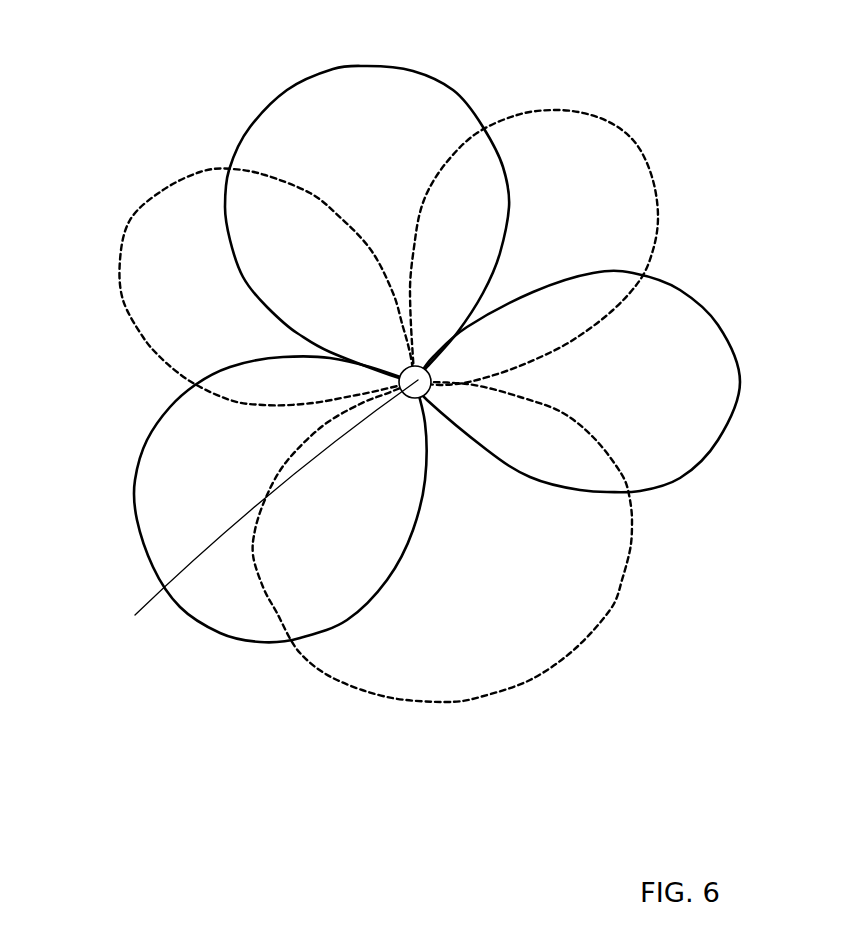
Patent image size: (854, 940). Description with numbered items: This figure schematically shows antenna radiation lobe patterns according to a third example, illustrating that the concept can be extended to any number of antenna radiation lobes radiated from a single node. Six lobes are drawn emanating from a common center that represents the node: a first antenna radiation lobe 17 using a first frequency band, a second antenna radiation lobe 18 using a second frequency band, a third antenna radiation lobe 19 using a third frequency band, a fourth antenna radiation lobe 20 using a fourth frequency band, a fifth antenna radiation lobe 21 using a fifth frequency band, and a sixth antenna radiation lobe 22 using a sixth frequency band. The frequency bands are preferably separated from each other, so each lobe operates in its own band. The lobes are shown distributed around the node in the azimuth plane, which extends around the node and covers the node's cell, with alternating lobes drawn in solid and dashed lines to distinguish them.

The first antenna radiation lobe 17 is at (413, 70).
The second antenna radiation lobe 18 is at (640, 152).
The third antenna radiation lobe 19 is at (707, 307).
The fourth antenna radiation lobe 20 is at (630, 560).
The fifth antenna radiation lobe 21 is at (140, 457).
The sixth antenna radiation lobe 22 is at (168, 187).